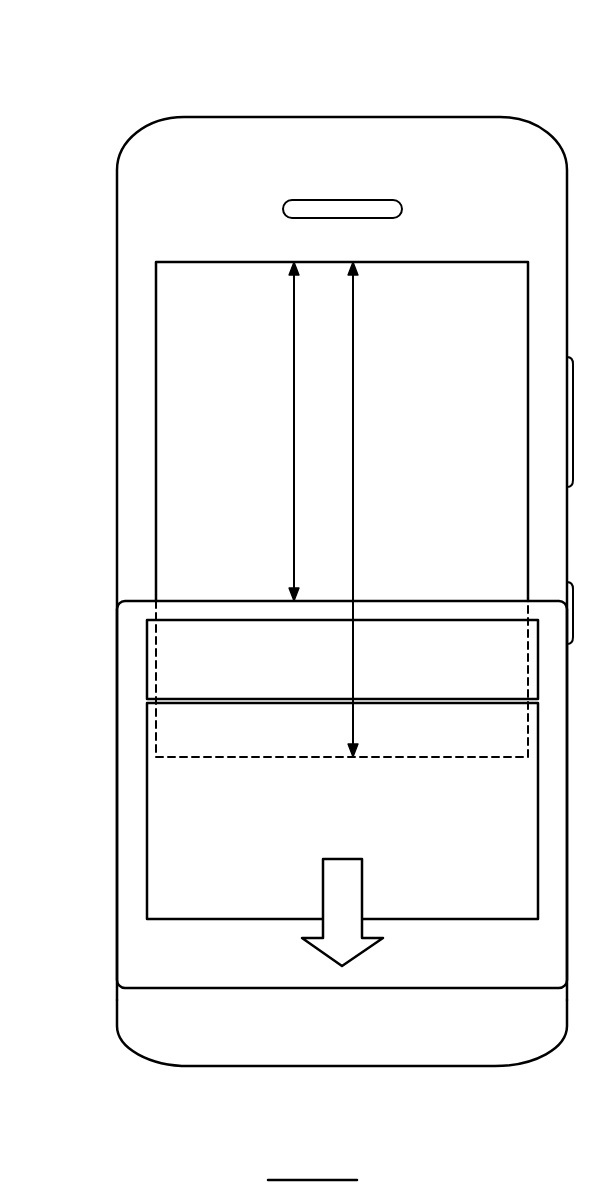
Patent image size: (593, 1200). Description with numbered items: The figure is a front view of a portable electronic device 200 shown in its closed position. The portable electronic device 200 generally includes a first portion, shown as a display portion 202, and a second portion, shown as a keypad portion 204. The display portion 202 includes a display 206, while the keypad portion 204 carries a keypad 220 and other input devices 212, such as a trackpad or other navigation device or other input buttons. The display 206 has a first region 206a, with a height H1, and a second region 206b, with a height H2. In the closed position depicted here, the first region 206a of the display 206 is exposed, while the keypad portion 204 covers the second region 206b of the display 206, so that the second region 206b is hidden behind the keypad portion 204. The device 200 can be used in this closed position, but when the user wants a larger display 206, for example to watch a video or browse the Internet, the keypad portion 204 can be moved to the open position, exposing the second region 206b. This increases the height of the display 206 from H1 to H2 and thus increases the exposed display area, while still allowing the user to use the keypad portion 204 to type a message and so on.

The portable electronic device 200 is at (140, 79).
The display portion 202 is at (450, 117).
The keypad portion 204 is at (141, 952).
The display 206 is at (183, 563).
The first region 206a is at (253, 355).
The second region 206b is at (172, 736).
The other input devices 212 is at (170, 662).
The keypad 220 is at (175, 828).
The height of first region H1 is at (293, 462).
The height of second region H2 is at (353, 468).